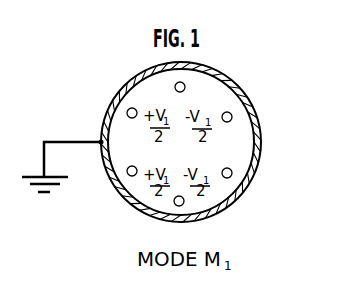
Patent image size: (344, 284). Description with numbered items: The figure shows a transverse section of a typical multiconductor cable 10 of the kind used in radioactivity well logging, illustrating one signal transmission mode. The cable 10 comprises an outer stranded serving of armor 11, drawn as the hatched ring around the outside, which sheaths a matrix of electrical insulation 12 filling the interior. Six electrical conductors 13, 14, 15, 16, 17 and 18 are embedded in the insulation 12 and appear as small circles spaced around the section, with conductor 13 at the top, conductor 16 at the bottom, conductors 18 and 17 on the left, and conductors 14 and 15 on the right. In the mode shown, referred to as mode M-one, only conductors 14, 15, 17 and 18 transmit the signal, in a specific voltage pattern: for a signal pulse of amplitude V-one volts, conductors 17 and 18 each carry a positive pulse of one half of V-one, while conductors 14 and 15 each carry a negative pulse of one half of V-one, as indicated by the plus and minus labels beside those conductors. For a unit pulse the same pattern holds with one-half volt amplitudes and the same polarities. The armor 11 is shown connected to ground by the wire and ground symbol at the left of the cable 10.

The multiconductor cable 10 is at (201, 137).
The outer stranded serving of armor 11 is at (124, 82).
The matrix of electrical insulation 12 is at (205, 88).
The electrical conductor 13 is at (177, 83).
The electrical conductor 14 is at (232, 114).
The electrical conductor 15 is at (232, 173).
The electrical conductor 16 is at (183, 206).
The electrical conductor 17 is at (128, 174).
The electrical conductor 18 is at (127, 113).